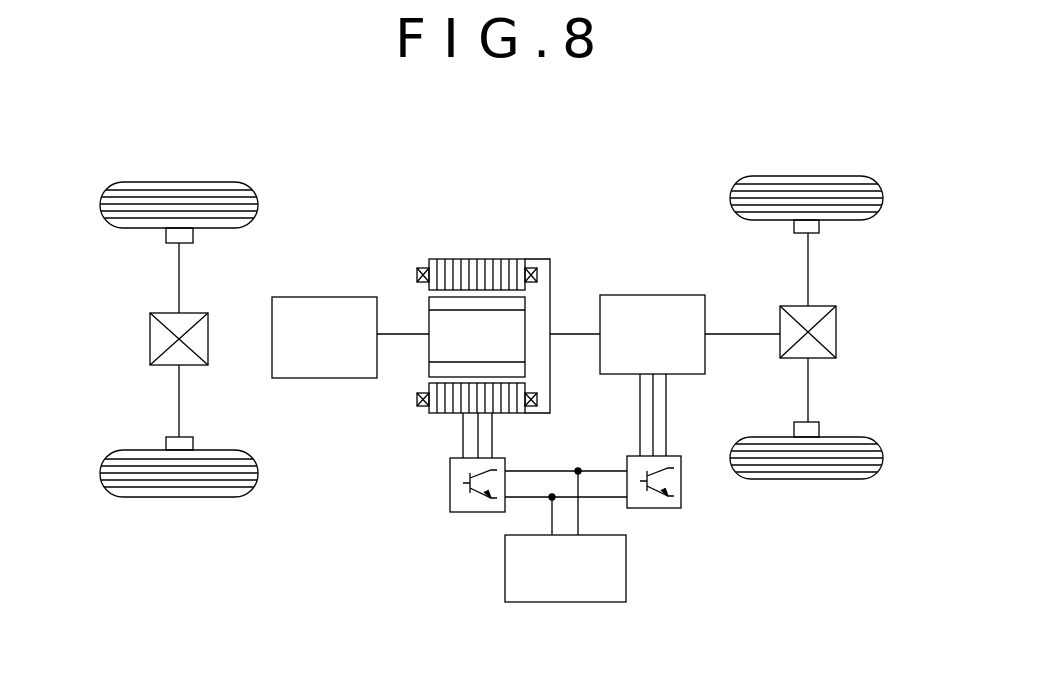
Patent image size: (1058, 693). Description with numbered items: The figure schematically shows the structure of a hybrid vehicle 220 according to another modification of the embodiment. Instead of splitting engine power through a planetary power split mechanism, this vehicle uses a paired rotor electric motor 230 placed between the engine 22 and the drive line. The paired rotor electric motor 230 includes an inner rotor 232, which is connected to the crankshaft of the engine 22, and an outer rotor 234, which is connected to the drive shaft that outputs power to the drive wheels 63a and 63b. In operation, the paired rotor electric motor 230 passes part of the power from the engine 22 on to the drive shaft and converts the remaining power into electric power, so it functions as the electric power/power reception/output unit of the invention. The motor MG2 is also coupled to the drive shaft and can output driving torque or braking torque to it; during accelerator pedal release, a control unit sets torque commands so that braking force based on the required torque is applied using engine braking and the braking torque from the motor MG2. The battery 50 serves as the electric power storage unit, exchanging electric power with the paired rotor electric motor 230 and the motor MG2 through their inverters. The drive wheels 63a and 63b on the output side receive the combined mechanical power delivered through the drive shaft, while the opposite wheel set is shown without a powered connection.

The engine 22 is at (325, 297).
The hybrid vehicle 220 is at (547, 158).
The paired rotor electric motor 230 is at (517, 185).
The inner rotor 232 is at (428, 319).
The outer rotor 234 is at (478, 259).
The motor MG2 is at (653, 295).
The battery 50 is at (626, 566).
The drive wheel 63a is at (809, 176).
The drive wheel 63b is at (808, 479).